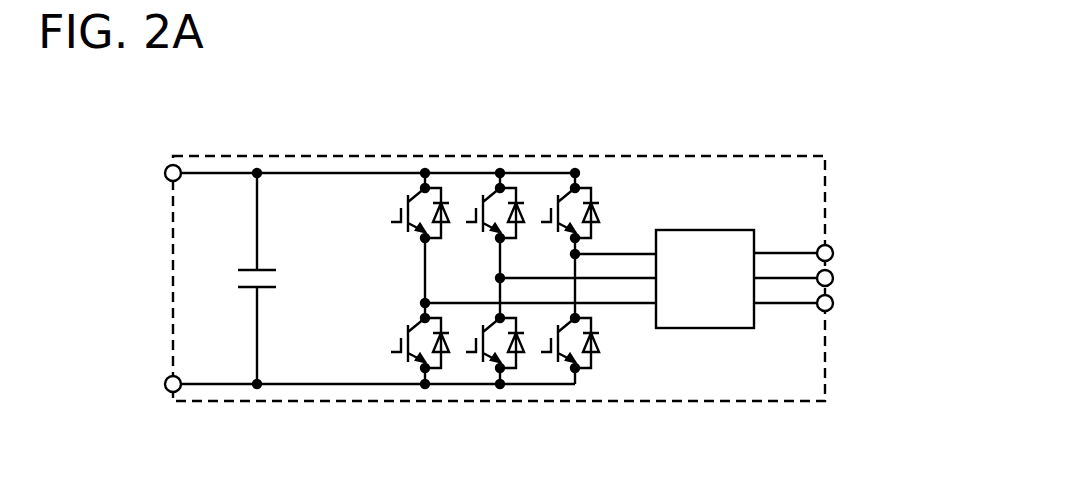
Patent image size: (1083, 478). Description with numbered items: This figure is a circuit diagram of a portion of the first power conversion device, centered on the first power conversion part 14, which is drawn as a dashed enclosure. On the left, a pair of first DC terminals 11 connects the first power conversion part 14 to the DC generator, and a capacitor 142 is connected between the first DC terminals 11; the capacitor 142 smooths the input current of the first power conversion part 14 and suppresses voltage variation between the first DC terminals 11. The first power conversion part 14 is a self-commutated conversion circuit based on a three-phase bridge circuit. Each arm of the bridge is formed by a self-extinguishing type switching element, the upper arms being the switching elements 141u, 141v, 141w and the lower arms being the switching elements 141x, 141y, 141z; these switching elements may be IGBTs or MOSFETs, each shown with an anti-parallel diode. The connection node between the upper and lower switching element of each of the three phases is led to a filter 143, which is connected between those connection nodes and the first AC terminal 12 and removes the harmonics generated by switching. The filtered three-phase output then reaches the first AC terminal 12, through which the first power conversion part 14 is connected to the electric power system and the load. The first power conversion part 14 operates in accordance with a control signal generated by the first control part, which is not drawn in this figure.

The first DC terminal 11 is at (164, 173).
The first AC terminal 12 is at (833, 253).
The first power conversion part 14 is at (703, 156).
The switching element 141u is at (415, 192).
The switching element 141v is at (488, 190).
The switching element 141w is at (558, 190).
The switching element 141x is at (400, 363).
The switching element 141y is at (487, 365).
The switching element 141z is at (560, 365).
The capacitor 142 is at (278, 279).
The filter 143 is at (708, 330).